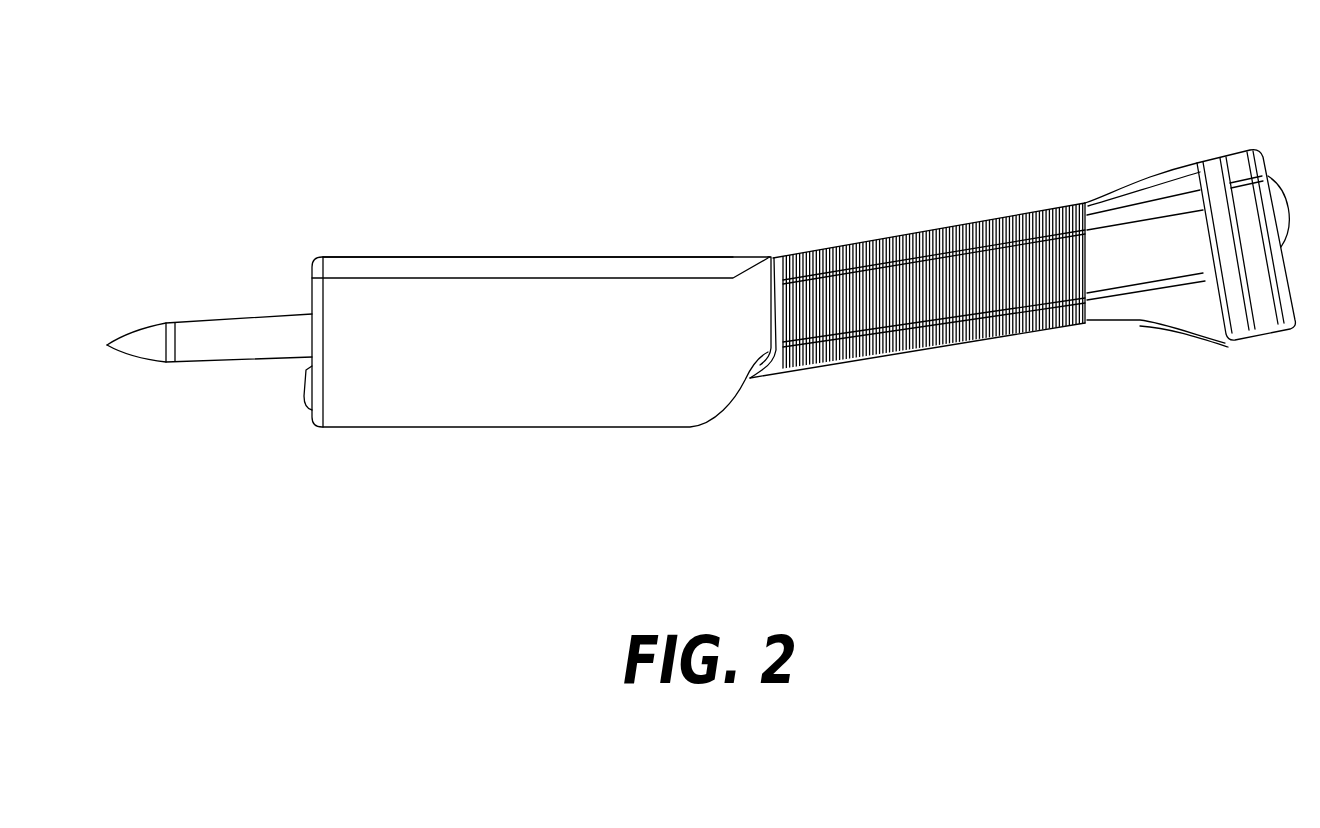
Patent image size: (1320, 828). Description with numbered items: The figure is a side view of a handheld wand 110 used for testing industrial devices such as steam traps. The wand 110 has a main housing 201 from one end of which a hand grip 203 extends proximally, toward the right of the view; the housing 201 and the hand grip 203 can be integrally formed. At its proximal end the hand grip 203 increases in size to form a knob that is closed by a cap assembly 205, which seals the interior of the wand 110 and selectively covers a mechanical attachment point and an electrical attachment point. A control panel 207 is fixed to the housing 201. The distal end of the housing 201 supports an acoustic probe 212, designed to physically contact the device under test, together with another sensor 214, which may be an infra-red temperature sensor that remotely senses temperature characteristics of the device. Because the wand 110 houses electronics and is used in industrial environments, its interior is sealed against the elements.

The wand 110 is at (641, 142).
The main housing 201 is at (555, 428).
The hand grip 203 is at (940, 347).
The cap assembly 205 is at (1265, 333).
The control panel 207 is at (462, 268).
The acoustic probe 212 is at (153, 362).
The sensor 214 is at (303, 392).